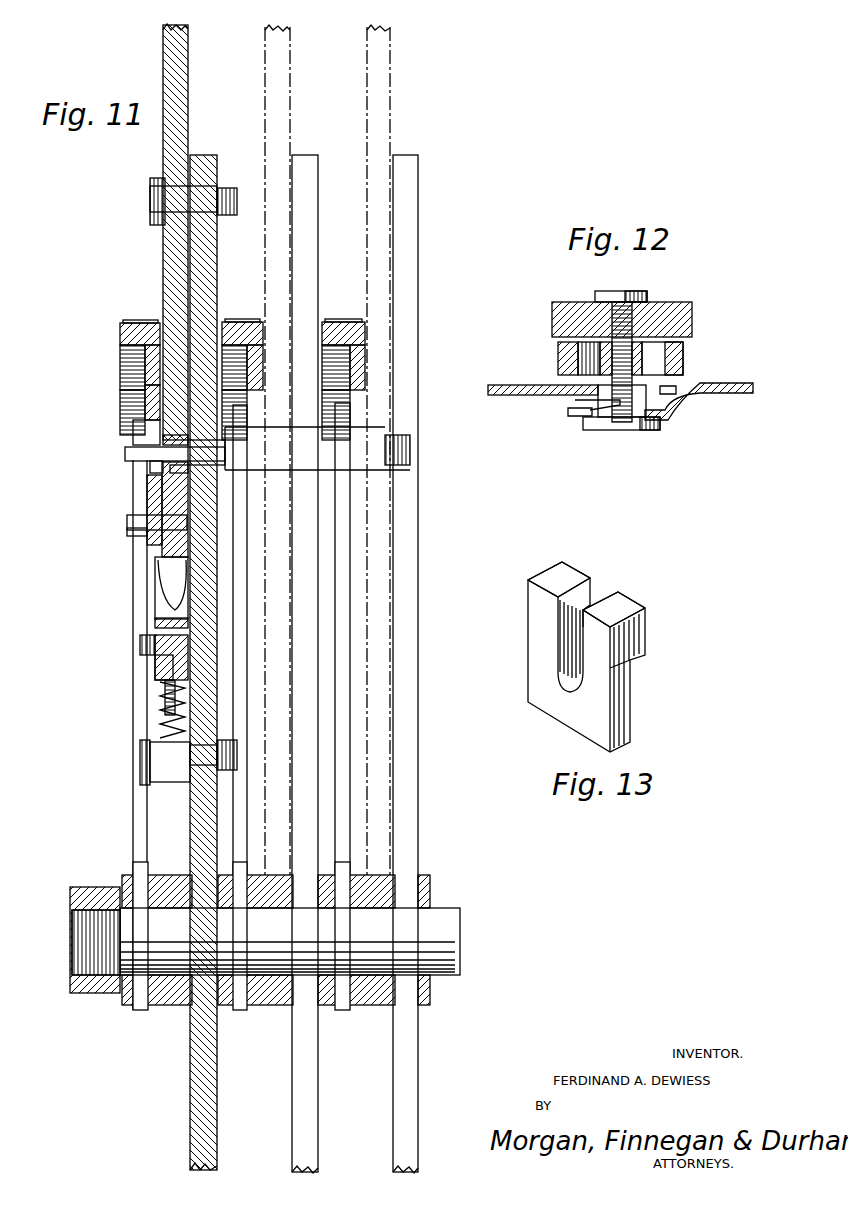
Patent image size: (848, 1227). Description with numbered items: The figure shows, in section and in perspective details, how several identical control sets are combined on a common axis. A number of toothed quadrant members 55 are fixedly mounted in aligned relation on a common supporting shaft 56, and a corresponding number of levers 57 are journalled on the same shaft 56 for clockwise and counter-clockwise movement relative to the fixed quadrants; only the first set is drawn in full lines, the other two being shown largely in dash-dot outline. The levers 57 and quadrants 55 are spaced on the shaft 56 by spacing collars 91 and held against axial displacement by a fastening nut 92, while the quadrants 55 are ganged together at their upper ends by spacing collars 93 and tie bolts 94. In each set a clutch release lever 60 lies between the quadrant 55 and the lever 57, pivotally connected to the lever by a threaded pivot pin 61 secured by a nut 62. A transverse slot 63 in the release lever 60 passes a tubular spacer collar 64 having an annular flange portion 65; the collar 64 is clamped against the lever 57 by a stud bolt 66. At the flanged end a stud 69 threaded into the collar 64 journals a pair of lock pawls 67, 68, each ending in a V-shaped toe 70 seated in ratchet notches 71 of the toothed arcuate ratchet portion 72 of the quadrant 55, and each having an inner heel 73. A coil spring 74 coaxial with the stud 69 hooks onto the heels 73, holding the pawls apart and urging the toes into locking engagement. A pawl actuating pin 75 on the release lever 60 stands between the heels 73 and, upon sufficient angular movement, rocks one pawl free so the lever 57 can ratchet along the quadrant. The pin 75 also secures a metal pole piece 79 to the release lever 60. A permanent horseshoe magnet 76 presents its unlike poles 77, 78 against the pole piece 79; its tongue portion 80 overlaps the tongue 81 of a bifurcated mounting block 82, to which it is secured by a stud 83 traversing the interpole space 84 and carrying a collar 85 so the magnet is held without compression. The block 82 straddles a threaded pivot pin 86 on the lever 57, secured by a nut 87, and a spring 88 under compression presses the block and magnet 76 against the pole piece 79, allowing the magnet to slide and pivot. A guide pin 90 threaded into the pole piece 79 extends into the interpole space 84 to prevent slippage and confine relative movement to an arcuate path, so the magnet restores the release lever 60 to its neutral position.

In FIG. 11, the toothed quadrant member 55 is at (118, 332).
In FIG. 11, the supporting shaft 56 is at (277, 944).
In FIG. 11, the lever 57 is at (205, 252).
In FIG. 12, the lever 57 is at (680, 318).
In FIG. 11, the clutch release lever 60 is at (188, 67).
In FIG. 12, the clutch release lever 60 is at (680, 352).
In FIG. 11, the threaded pivot pin 61 is at (160, 185).
In FIG. 11, the nut 62 is at (230, 192).
In FIG. 11, the transverse slot 63 is at (175, 440).
In FIG. 12, the transverse slot 63 is at (570, 345).
In FIG. 11, the tubular spacer collar 64 is at (185, 468).
In FIG. 12, the tubular spacer collar 64 is at (585, 357).
In FIG. 12, the annular flange portion 65 is at (683, 362).
In FIG. 11, the stud bolt 66 is at (200, 462).
In FIG. 12, the stud bolt 66 is at (628, 315).
In FIG. 11, the lock pawl 67 is at (140, 425).
In FIG. 12, the lock pawl 67 is at (532, 393).
In FIG. 11, the lock pawl 68 is at (135, 482).
In FIG. 12, the lock pawl 68 is at (725, 395).
In FIG. 11, the stud 69 is at (128, 467).
In FIG. 12, the stud 69 is at (640, 430).
In FIG. 11, the V-shaped toe 70 is at (148, 405).
In FIG. 11, the ratchet notches 71 is at (135, 393).
In FIG. 11, the toothed arcuate ratchet portion 72 is at (122, 362).
In FIG. 11, the heel 73 is at (140, 535).
In FIG. 12, the heel 73 is at (568, 412).
In FIG. 11, the coil spring 74 is at (130, 452).
In FIG. 12, the coil spring 74 is at (615, 405).
In FIG. 11, the pawl actuating pin 75 is at (130, 533).
In FIG. 11, the permanent horseshoe magnet 76 is at (155, 602).
In FIG. 13, the permanent horseshoe magnet 76 is at (530, 662).
In FIG. 13, the pole 77 is at (562, 575).
In FIG. 13, the pole 78 is at (620, 603).
In FIG. 11, the metal pole piece 79 is at (160, 565).
In FIG. 11, the tongue portion 80 is at (155, 668).
In FIG. 13, the tongue portion 80 is at (625, 702).
In FIG. 11, the tongue 81 is at (185, 655).
In FIG. 11, the bifurcated mounting block 82 is at (160, 683).
In FIG. 11, the stud 83 is at (140, 650).
In FIG. 13, the interpole space 84 is at (596, 590).
In FIG. 11, the collar 85 is at (155, 622).
In FIG. 11, the threaded pivot pin 86 is at (160, 752).
In FIG. 11, the nut 87 is at (237, 752).
In FIG. 11, the spring 88 is at (160, 720).
In FIG. 11, the guide pin 90 is at (186, 595).
In FIG. 11, the spacing collars 91 is at (128, 1008).
In FIG. 11, the fastening nut 92 is at (75, 988).
In FIG. 11, the spacing collars 93 is at (275, 470).
In FIG. 11, the tie bolts 94 is at (410, 442).